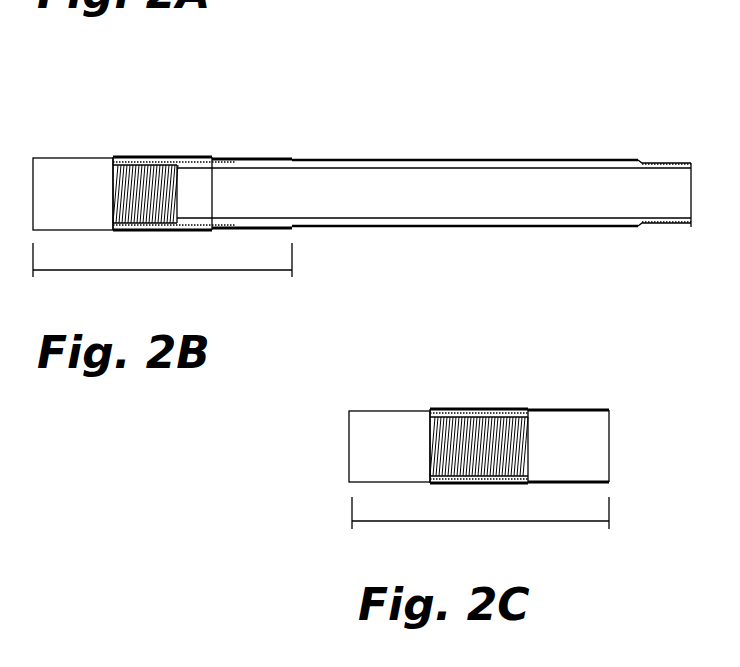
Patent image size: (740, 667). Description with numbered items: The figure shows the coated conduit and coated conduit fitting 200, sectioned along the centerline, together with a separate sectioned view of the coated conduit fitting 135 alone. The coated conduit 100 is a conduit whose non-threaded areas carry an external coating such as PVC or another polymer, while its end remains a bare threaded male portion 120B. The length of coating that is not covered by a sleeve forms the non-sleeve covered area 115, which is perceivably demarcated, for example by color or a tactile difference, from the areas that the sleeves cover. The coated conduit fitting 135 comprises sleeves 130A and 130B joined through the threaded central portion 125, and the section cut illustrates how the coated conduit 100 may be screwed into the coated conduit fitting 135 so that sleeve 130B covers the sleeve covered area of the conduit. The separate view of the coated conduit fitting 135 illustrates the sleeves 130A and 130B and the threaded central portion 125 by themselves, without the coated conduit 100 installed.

In FIG. 2B, the coated conduit 100 is at (413, 160).
In FIG. 2B, the non-sleeve covered area 115 is at (445, 226).
In FIG. 2B, the threaded male portion 120B is at (672, 162).
In FIG. 2B, the threaded connection region 125 is at (160, 157).
In FIG. 2C, the threaded connection region 125 is at (474, 409).
In FIG. 2B, the sleeve 130A is at (78, 158).
In FIG. 2C, the sleeve 130A is at (393, 411).
In FIG. 2B, the sleeve 130B is at (268, 159).
In FIG. 2C, the sleeve 130B is at (585, 410).
In FIG. 2B, the coated conduit fitting 135 is at (170, 291).
In FIG. 2C, the coated conduit fitting 135 is at (487, 543).
In FIG. 2B, the coated conduit and coated conduit fitting 200 is at (527, 38).